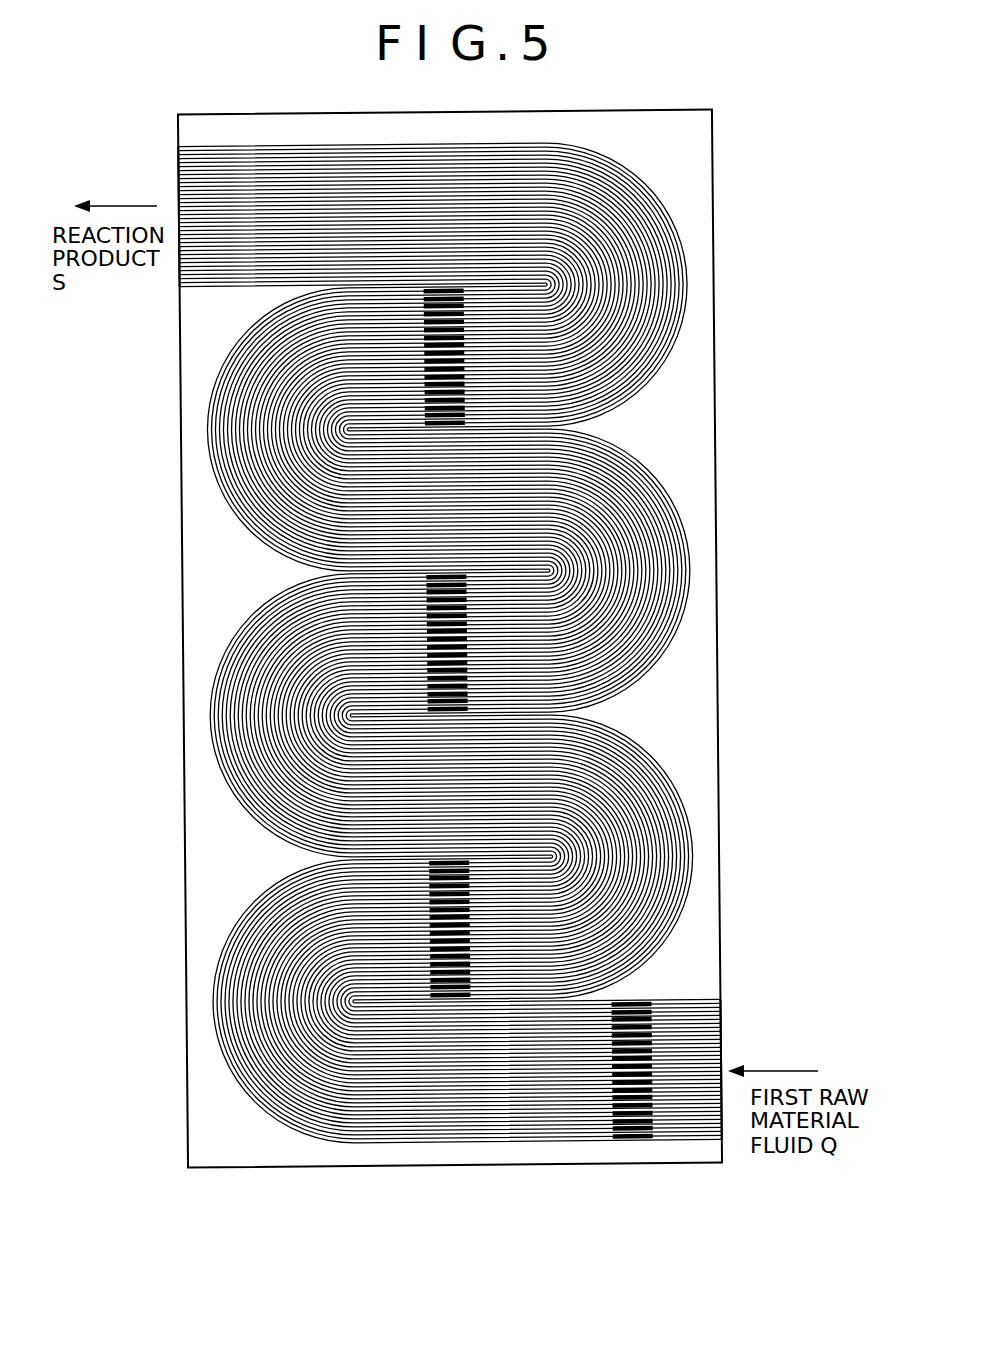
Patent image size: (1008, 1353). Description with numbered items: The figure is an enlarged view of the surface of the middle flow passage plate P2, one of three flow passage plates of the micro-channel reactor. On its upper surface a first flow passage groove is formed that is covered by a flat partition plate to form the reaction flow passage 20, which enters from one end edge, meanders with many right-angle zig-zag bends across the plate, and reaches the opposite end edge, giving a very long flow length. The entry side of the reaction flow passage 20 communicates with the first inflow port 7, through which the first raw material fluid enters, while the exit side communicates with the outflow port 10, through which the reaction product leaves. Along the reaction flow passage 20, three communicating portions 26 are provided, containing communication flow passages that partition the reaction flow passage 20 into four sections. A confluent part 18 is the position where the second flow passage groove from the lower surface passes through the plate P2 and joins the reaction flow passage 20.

The outflow port 10 is at (185, 163).
The middle flow passage plate P2 is at (695, 247).
The reaction flow passage 20 is at (683, 331).
The communicating portion 26 is at (622, 643).
The confluent part 18 is at (640, 1052).
The first inflow port 7 is at (722, 1043).